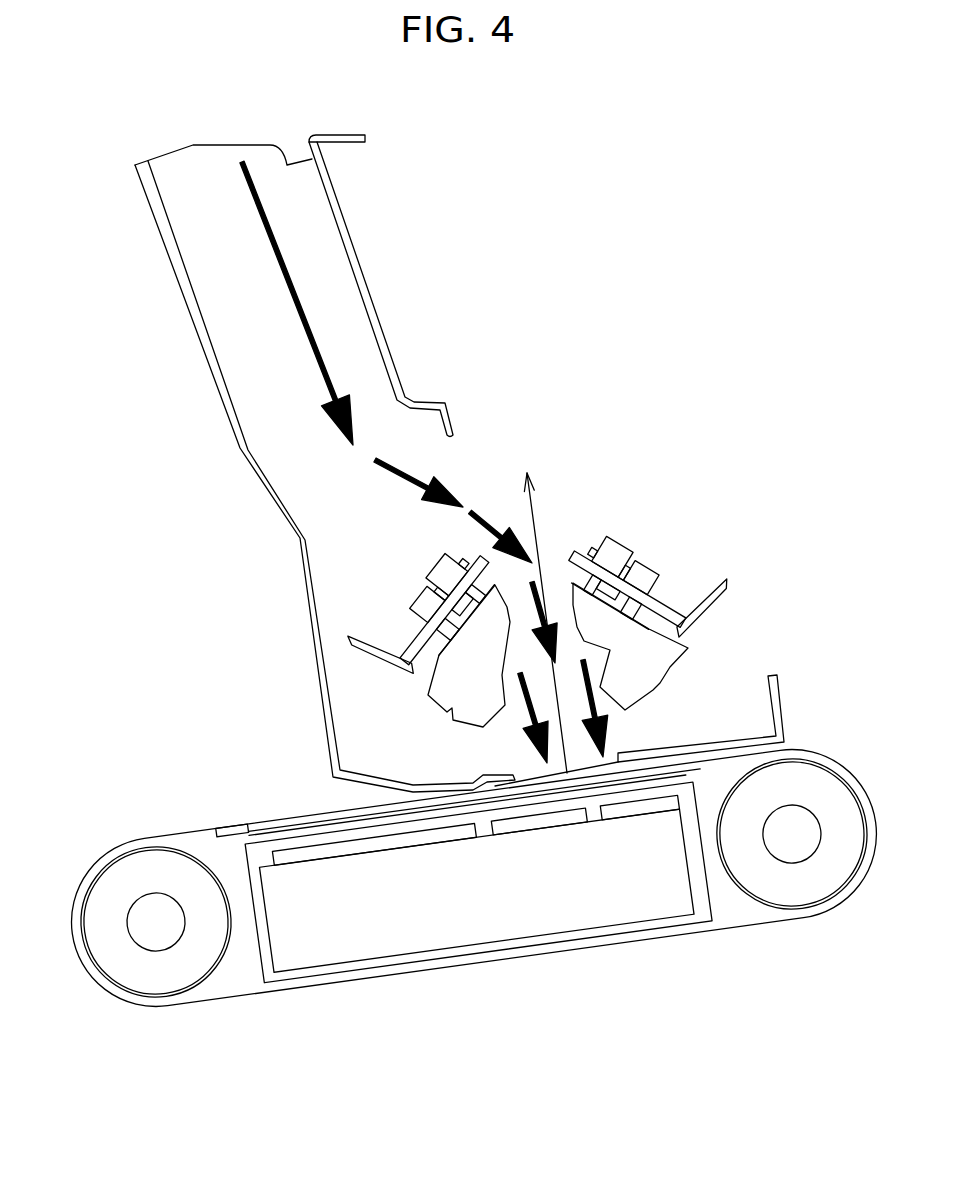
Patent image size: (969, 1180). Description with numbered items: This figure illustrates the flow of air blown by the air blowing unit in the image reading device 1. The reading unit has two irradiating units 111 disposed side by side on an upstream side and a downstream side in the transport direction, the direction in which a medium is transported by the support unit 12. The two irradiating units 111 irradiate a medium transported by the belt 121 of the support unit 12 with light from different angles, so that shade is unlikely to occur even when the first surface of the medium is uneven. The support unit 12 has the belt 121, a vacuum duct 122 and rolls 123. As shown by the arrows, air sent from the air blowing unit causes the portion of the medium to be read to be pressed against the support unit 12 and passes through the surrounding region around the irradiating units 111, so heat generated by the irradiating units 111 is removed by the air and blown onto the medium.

The image reading device 1 is at (156, 1058).
The irradiating unit 111 is at (467, 688).
The support unit 12 is at (279, 705).
The belt 121 is at (302, 813).
The vacuum duct 122 is at (267, 853).
The roll 123 is at (146, 867).